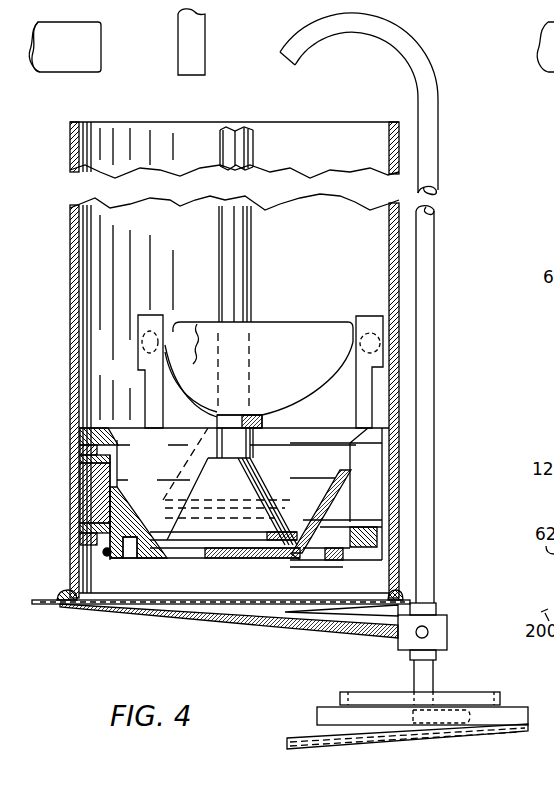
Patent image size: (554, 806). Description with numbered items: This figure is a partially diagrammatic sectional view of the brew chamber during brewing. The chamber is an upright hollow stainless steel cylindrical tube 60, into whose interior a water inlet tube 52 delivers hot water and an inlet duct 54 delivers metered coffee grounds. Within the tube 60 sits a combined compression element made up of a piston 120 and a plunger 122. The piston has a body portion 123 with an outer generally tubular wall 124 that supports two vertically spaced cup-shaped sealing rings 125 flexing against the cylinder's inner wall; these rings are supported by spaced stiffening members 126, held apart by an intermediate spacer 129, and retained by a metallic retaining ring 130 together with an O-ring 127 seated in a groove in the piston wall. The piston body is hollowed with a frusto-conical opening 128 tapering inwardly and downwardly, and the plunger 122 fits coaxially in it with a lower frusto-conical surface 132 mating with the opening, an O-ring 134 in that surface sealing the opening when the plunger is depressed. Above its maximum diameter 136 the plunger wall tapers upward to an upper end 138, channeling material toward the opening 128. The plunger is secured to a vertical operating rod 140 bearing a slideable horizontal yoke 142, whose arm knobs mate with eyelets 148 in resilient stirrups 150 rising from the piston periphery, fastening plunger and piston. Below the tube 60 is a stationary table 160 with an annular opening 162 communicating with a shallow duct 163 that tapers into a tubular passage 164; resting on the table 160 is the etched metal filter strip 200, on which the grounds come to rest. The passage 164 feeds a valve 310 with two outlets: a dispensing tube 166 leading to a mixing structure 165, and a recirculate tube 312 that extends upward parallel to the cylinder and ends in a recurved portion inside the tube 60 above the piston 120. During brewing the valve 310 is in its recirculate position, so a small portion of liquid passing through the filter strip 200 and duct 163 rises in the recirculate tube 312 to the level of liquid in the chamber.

The water inlet tube 52 is at (202, 57).
The inlet duct 54 is at (72, 57).
The cylindrical tube 60 is at (70, 290).
The piston 120 is at (165, 459).
The plunger 122 is at (272, 482).
The body portion 123 is at (327, 466).
The outer tubular wall 124 is at (80, 433).
The sealing rings 125 is at (80, 448).
The stiffening members 126 is at (80, 458).
The O-ring 127 is at (107, 556).
The frusto-conical opening 128 is at (335, 505).
The intermediate spacer 129 is at (80, 493).
The retaining ring 130 is at (100, 548).
The lower frusto-conical surface 132 is at (300, 556).
The O-ring 134 is at (262, 543).
The maximum diameter 136 is at (163, 540).
The upper end 138 is at (245, 477).
The operating rod 140 is at (243, 243).
The yoke 142 is at (317, 357).
The eyelets 148 is at (145, 347).
The stirrups 150 is at (363, 392).
The stationary table 160 is at (88, 607).
The annular opening 162 is at (213, 607).
The shallow duct 163 is at (263, 614).
The tubular passage 164 is at (333, 625).
The mixing structure 165 is at (548, 705).
The dispensing tube 166 is at (426, 678).
The filter strip 200 is at (45, 604).
The valve 310 is at (444, 630).
The recirculate tube 312 is at (427, 238).